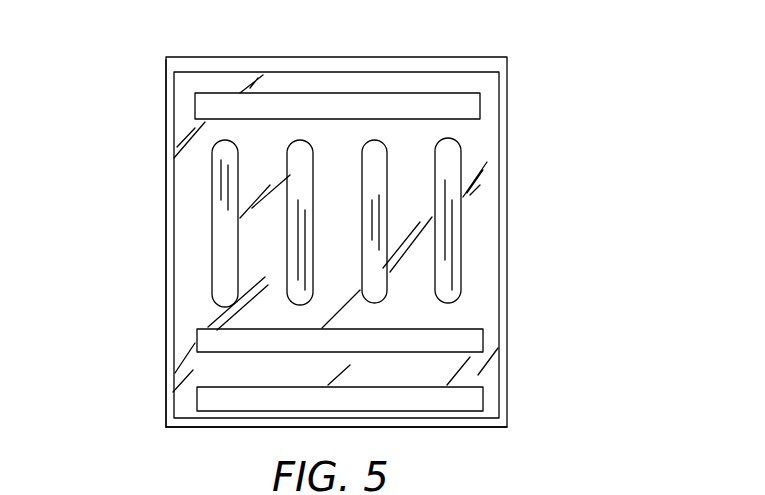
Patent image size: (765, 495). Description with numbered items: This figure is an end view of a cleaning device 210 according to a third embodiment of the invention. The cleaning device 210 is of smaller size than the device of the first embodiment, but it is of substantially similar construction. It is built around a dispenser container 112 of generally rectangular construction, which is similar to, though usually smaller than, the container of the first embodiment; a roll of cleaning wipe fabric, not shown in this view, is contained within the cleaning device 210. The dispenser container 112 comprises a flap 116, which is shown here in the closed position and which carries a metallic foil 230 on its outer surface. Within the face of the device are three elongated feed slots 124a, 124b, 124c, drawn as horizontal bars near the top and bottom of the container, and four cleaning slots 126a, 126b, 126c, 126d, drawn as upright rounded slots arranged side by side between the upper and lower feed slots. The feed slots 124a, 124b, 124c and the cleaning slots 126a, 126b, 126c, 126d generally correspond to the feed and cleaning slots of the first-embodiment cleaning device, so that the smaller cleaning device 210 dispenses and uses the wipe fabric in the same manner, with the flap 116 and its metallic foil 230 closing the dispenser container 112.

The dispenser container 112 is at (164, 93).
The flap 116 is at (507, 333).
The cleaning device 210 is at (162, 296).
The metallic foil 230 is at (473, 298).
The feed slot 124a is at (455, 116).
The feed slot 124b is at (463, 342).
The feed slot 124c is at (460, 400).
The cleaning slot 126a is at (228, 178).
The cleaning slot 126b is at (300, 228).
The cleaning slot 126c is at (385, 228).
The cleaning slot 126d is at (448, 232).